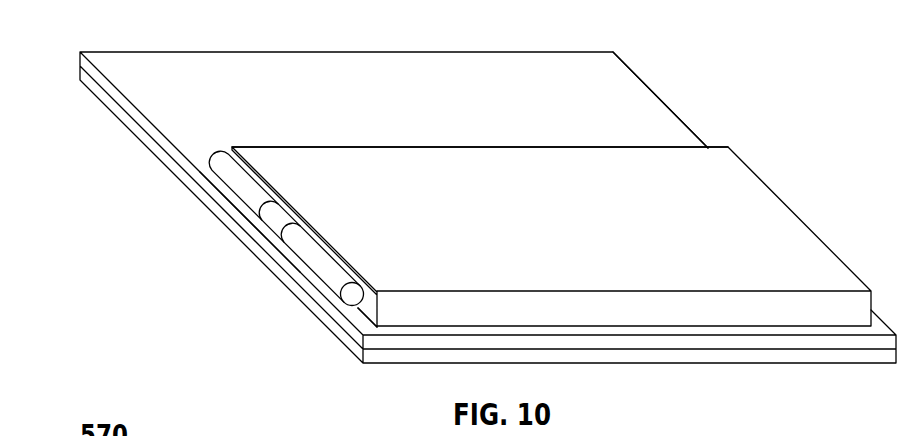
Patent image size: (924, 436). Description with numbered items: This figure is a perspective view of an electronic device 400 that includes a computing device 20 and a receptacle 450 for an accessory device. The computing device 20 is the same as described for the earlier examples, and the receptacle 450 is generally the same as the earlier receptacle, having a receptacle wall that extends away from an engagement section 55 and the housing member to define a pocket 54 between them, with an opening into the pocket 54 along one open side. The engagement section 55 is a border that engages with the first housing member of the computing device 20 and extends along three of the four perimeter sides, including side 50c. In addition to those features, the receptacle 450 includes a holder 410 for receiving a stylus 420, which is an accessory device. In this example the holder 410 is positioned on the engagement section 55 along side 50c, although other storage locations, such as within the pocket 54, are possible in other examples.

The computing device 20 is at (97, 52).
The pocket 54 is at (437, 148).
The electronic device 400 is at (712, 100).
The receptacle 450 is at (795, 203).
The stylus 420 is at (238, 178).
The holder 410 is at (271, 219).
The side 50c is at (295, 272).
The engagement section 55 is at (367, 328).